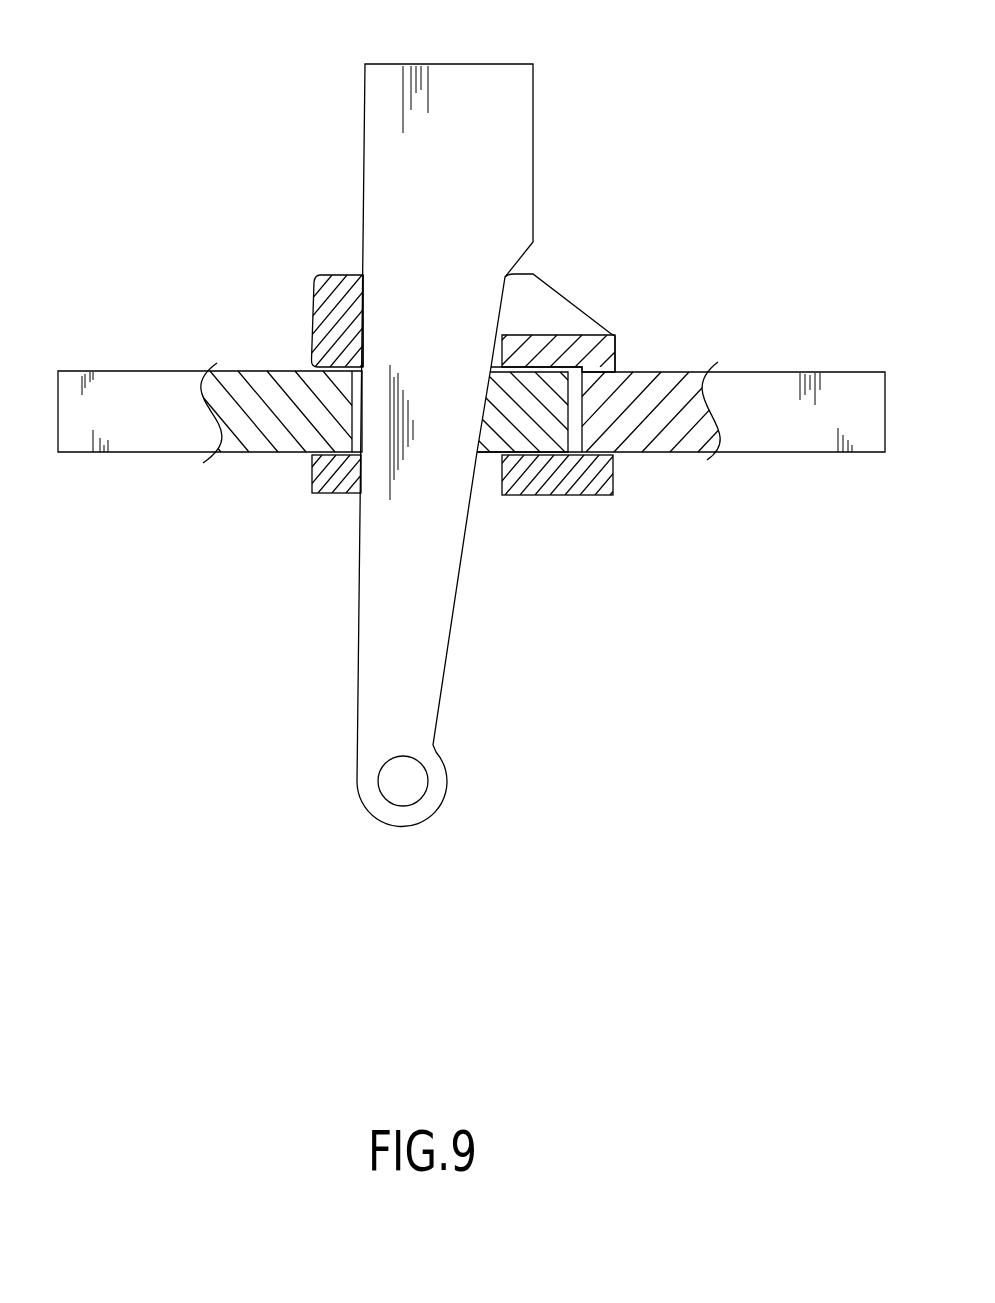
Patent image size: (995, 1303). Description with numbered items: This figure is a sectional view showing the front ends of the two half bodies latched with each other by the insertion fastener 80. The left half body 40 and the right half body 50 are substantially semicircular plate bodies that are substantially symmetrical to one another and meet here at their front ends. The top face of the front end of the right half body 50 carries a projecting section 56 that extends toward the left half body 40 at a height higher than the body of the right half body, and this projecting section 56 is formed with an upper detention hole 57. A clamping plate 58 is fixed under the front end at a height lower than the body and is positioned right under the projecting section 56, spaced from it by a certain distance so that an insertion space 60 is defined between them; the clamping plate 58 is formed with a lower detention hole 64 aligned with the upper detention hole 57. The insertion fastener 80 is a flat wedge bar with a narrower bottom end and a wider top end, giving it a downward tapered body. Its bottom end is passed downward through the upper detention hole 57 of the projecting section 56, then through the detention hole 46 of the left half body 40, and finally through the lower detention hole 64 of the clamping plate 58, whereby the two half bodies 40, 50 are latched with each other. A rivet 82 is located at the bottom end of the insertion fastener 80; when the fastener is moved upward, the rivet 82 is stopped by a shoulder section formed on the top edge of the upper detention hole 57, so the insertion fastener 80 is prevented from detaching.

The insertion fastener 80 is at (550, 128).
The rivet 82 is at (415, 790).
The left half body 40 is at (127, 352).
The right half body 50 is at (818, 358).
The detention hole 46 is at (350, 415).
The projecting section 56 is at (312, 318).
The upper detention hole 57 is at (362, 322).
The lower detention hole 64 is at (350, 493).
The clamping plate 58 is at (563, 495).
The insertion space 60 is at (577, 425).